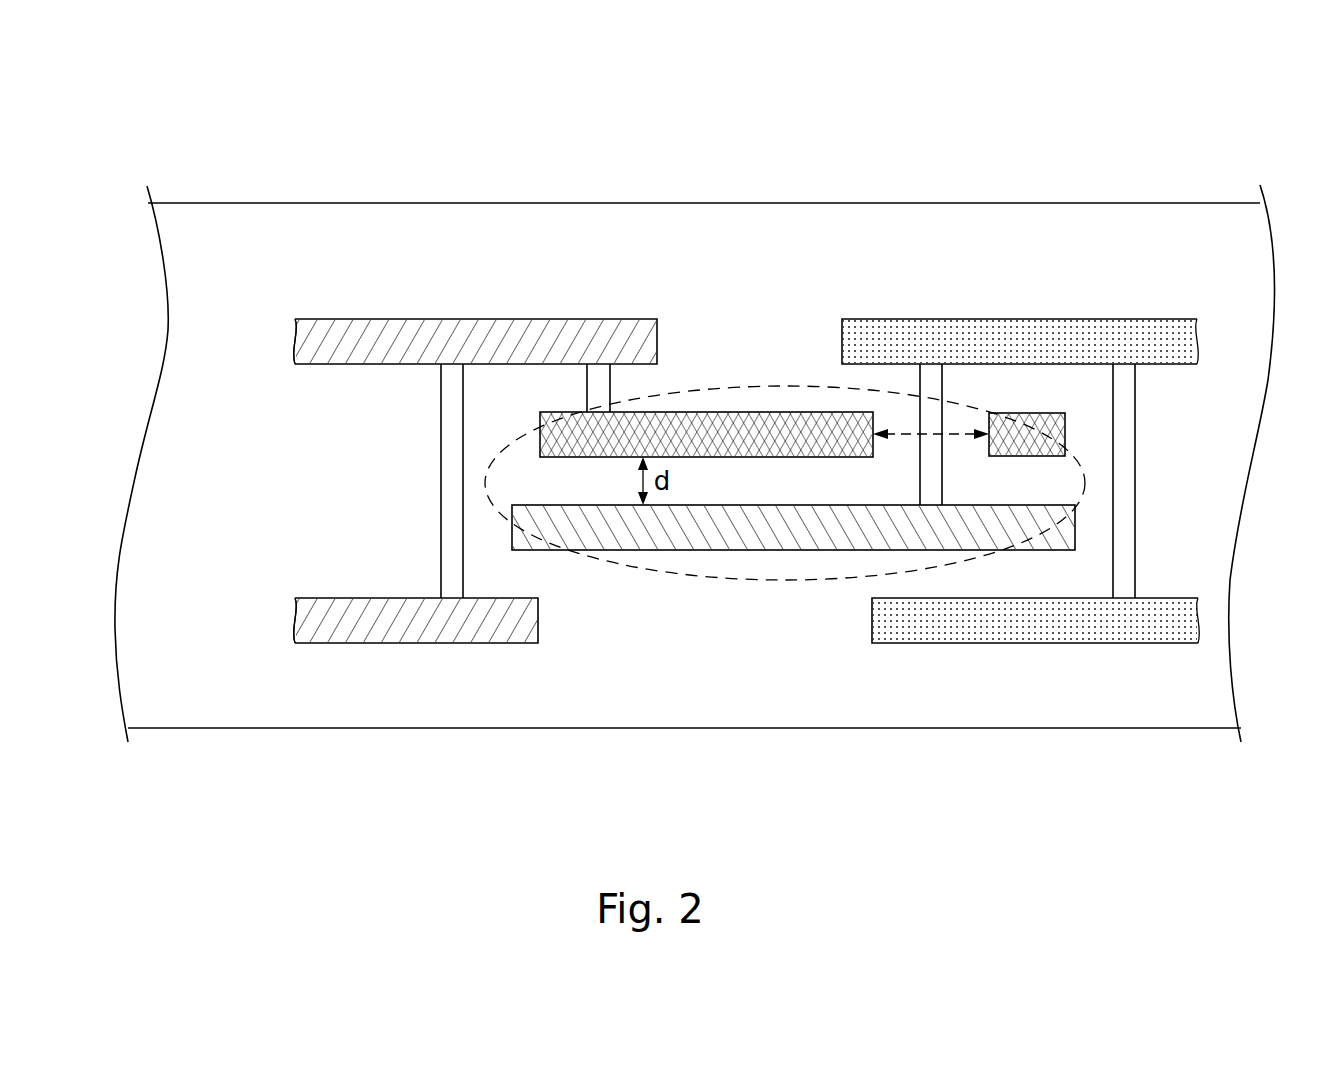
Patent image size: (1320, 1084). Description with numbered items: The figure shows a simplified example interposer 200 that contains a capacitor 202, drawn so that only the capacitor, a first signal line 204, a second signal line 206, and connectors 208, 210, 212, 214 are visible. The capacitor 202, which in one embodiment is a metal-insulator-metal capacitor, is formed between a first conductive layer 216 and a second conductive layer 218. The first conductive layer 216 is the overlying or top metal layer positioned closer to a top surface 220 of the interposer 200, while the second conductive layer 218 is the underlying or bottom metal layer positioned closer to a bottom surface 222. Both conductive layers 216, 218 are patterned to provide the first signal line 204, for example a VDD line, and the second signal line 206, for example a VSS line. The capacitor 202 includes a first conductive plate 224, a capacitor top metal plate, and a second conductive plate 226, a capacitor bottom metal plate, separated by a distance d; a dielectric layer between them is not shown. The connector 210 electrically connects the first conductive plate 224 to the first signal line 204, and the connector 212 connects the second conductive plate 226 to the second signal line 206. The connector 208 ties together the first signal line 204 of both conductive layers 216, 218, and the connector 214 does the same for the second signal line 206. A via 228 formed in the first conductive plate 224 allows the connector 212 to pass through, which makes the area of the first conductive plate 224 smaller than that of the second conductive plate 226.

The interposer 200 is at (1209, 135).
The capacitor 202 is at (785, 388).
The first signal line 204 is at (450, 319).
The second signal line 206 is at (930, 319).
The connector 208 is at (441, 405).
The connector 210 is at (587, 383).
The connector 212 is at (942, 383).
The connector 214 is at (1135, 403).
The first conductive layer 216 is at (278, 342).
The second conductive layer 218 is at (278, 620).
The top surface 220 is at (606, 203).
The bottom surface 222 is at (852, 728).
The first conductive plate 224 is at (710, 412).
The second conductive plate 226 is at (762, 550).
The via 228 is at (950, 434).